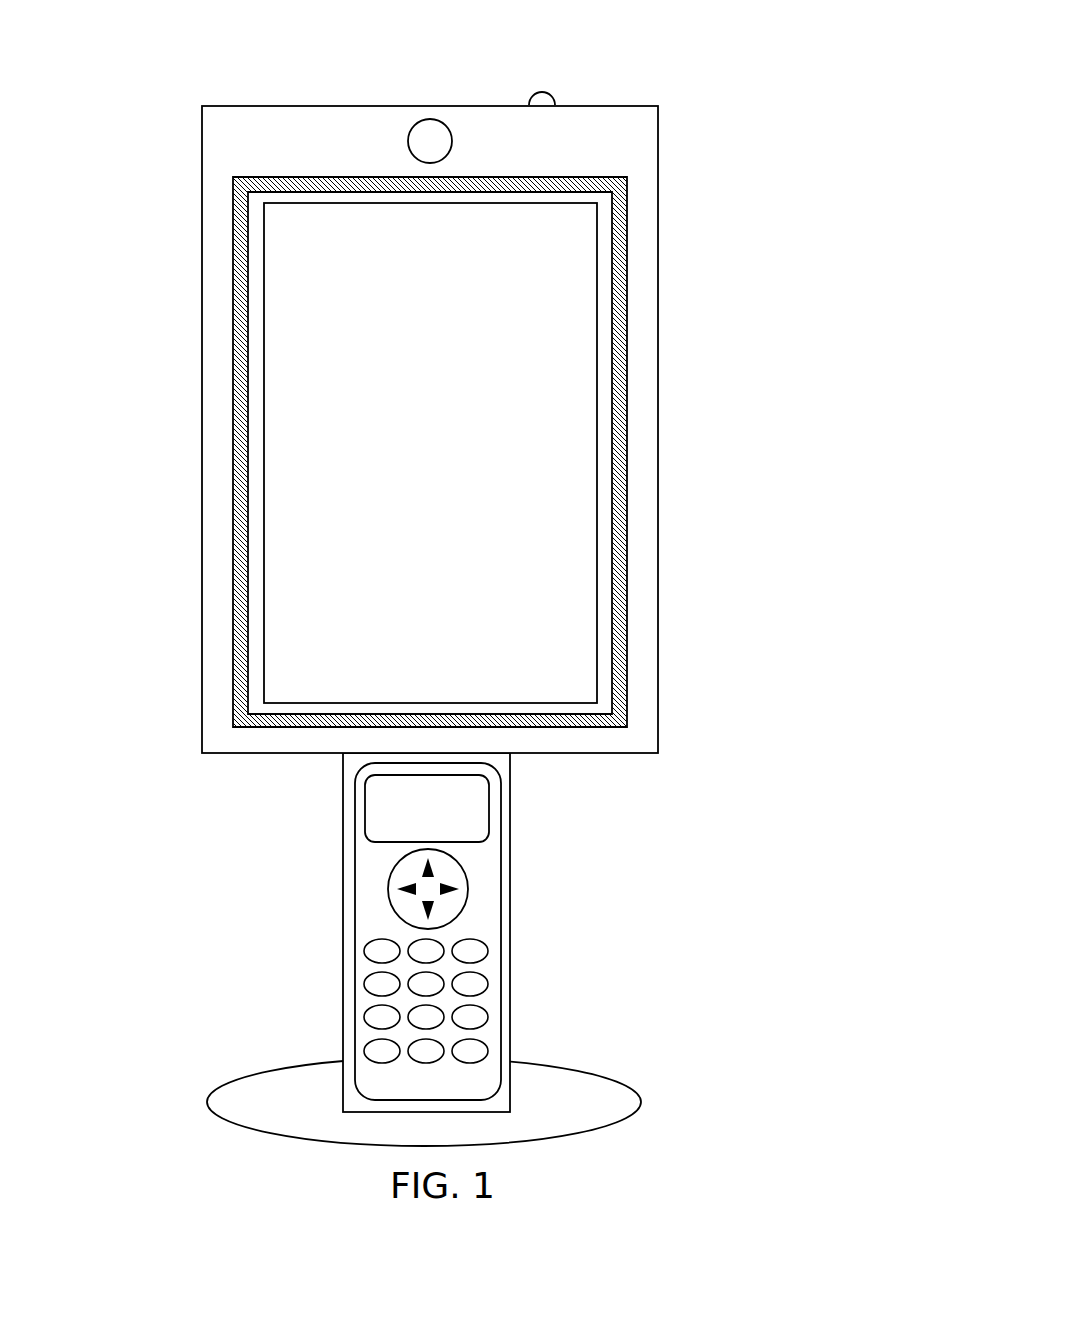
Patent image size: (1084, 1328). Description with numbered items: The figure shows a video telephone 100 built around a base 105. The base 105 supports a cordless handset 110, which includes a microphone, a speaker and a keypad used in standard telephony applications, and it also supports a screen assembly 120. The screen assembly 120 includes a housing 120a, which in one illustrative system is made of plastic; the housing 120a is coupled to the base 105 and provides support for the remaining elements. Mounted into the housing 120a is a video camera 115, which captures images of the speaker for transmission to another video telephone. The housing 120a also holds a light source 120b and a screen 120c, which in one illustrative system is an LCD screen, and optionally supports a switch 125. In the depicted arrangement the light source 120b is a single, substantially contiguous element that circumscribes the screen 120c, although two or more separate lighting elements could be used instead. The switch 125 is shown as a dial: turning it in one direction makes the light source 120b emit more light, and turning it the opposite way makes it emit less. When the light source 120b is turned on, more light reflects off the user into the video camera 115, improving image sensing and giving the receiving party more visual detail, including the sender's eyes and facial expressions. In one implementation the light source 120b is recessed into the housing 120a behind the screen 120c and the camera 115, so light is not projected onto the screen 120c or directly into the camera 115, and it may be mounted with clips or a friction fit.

The video telephone 100 is at (73, 61).
The base 105 is at (510, 933).
The cordless handset 110 is at (368, 878).
The video camera 115 is at (422, 147).
The screen assembly 120 is at (453, 429).
The housing 120a is at (643, 680).
The light source 120b is at (618, 567).
The screen 120c is at (558, 492).
The switch 125 is at (552, 98).